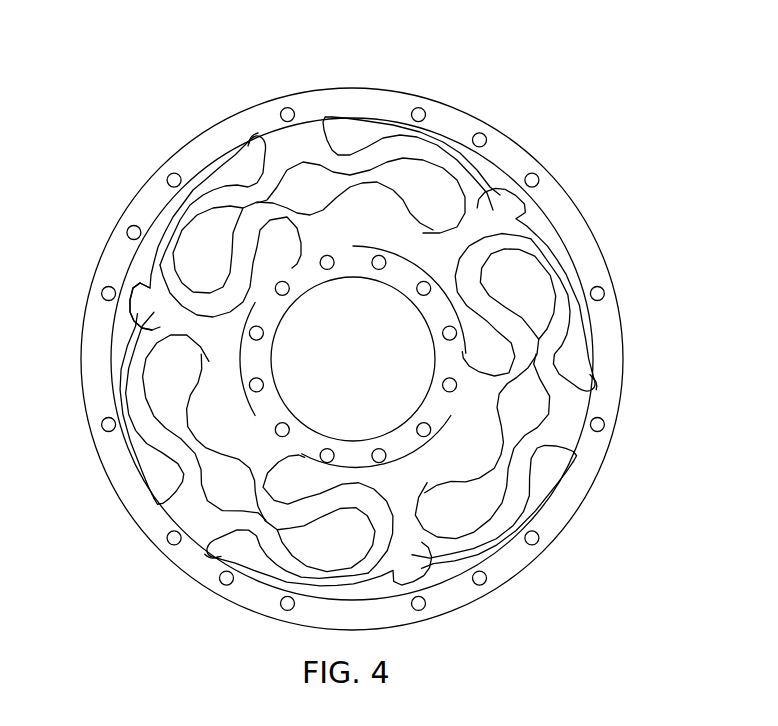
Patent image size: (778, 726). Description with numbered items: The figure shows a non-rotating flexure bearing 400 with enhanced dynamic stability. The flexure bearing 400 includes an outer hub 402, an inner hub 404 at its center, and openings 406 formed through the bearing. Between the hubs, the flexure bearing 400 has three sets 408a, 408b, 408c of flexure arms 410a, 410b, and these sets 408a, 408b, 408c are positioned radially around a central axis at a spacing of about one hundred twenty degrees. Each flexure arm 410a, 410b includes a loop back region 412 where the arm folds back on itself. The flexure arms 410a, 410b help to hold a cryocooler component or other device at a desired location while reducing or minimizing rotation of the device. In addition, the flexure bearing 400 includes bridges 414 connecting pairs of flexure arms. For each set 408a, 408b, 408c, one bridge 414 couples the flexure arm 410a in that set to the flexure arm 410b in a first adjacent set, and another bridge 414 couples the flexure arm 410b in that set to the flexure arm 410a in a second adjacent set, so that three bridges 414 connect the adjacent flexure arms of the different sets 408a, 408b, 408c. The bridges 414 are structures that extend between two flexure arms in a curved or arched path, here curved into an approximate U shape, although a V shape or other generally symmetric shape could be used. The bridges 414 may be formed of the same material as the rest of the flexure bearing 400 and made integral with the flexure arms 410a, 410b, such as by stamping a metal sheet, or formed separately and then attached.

The flexure bearing 400 is at (485, 86).
The outer hub 402 is at (508, 152).
The inner hub 404 is at (443, 358).
The openings 406 is at (606, 293).
The first set of flexure arms 408a is at (272, 127).
The second set of flexure arms 408b is at (574, 433).
The third set of flexure arms 408c is at (172, 518).
The flexure arm 410a is at (130, 367).
The flexure arm 410b is at (272, 548).
The loop back region 412 is at (150, 330).
The bridge 414 is at (138, 295).